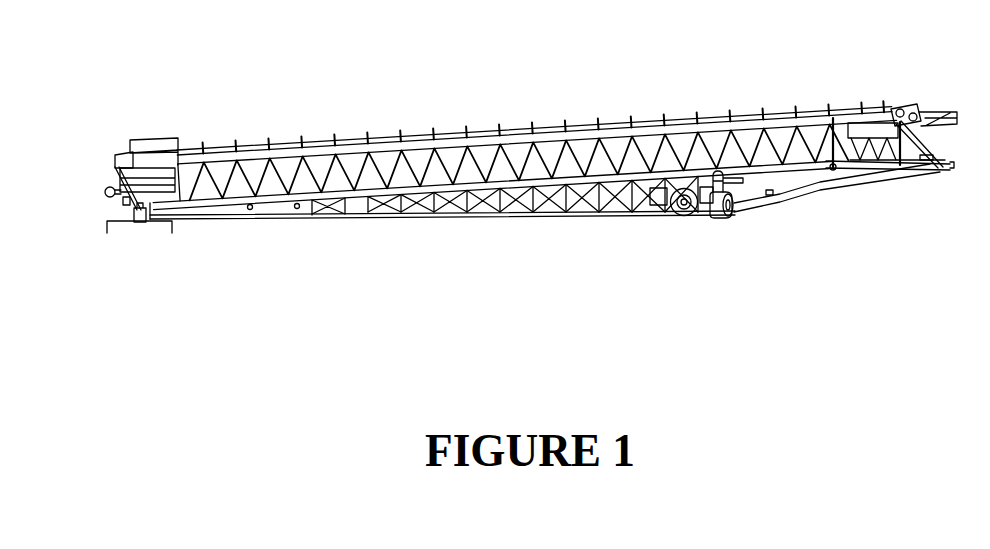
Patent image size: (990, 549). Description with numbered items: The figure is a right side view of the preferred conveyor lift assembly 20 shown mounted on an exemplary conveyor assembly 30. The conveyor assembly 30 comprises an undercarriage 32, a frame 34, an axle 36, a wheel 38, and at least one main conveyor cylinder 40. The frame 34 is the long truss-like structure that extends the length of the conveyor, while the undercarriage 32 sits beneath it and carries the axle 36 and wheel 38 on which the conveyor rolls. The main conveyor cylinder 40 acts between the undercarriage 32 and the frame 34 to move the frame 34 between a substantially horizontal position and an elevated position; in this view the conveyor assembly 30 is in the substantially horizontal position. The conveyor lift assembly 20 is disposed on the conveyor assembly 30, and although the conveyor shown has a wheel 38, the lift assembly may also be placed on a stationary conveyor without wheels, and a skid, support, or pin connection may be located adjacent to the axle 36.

The conveyor lift assembly 20 is at (714, 168).
The conveyor assembly 30 is at (497, 125).
The undercarriage 32 is at (508, 211).
The frame 34 is at (815, 110).
The axle 36 is at (735, 214).
The wheel 38 is at (708, 218).
The main conveyor cylinder 40 is at (842, 192).